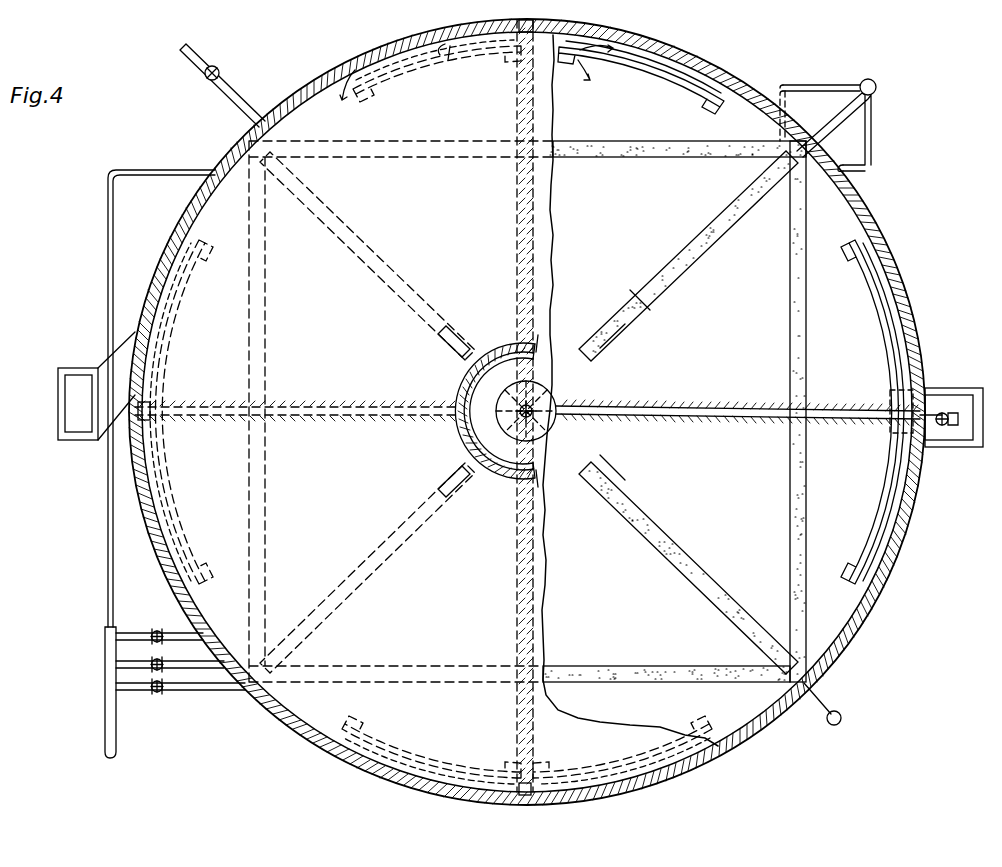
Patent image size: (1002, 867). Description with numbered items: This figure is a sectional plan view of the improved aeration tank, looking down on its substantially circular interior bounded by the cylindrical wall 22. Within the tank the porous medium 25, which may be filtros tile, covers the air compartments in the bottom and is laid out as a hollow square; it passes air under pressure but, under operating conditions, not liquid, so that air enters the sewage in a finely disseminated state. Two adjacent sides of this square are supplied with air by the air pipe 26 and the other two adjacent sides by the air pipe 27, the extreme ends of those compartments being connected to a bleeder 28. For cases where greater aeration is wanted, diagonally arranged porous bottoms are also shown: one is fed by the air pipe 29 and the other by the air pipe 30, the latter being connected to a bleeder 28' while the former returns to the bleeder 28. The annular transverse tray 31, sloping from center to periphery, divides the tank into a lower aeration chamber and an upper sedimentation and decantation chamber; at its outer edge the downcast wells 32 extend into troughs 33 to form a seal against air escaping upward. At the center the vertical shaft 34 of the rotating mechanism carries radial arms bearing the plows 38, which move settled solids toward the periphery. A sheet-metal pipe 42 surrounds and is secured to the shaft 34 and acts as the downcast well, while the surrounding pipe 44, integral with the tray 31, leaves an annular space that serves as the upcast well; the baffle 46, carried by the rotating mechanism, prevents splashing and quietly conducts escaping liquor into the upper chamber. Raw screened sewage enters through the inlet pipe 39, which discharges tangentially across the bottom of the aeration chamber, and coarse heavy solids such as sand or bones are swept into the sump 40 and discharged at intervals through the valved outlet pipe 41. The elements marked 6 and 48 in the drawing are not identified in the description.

The cylindrical wall 22 is at (858, 612).
The porous medium 25 is at (657, 157).
The radial arms 6 is at (632, 316).
The transverse tray 31 is at (543, 622).
The downcast wells 32 is at (170, 505).
The troughs 33 is at (184, 530).
The plows 38 is at (706, 420).
The cylindrical pipe 42 is at (554, 420).
The shaft 34 is at (540, 403).
The baffle 46 is at (462, 441).
The cylindrical well 44 is at (507, 453).
The air pipe 30 is at (186, 170).
The air pipe 29 is at (176, 640).
The air pipe 27 is at (214, 668).
The air pipe 26 is at (196, 690).
The pipe 48 is at (235, 100).
The bleeder 28 is at (828, 106).
The bleeder 28' is at (843, 720).
The inlet pipe 39 is at (80, 434).
The sump 40 is at (893, 432).
The outlet pipe 41 is at (943, 428).